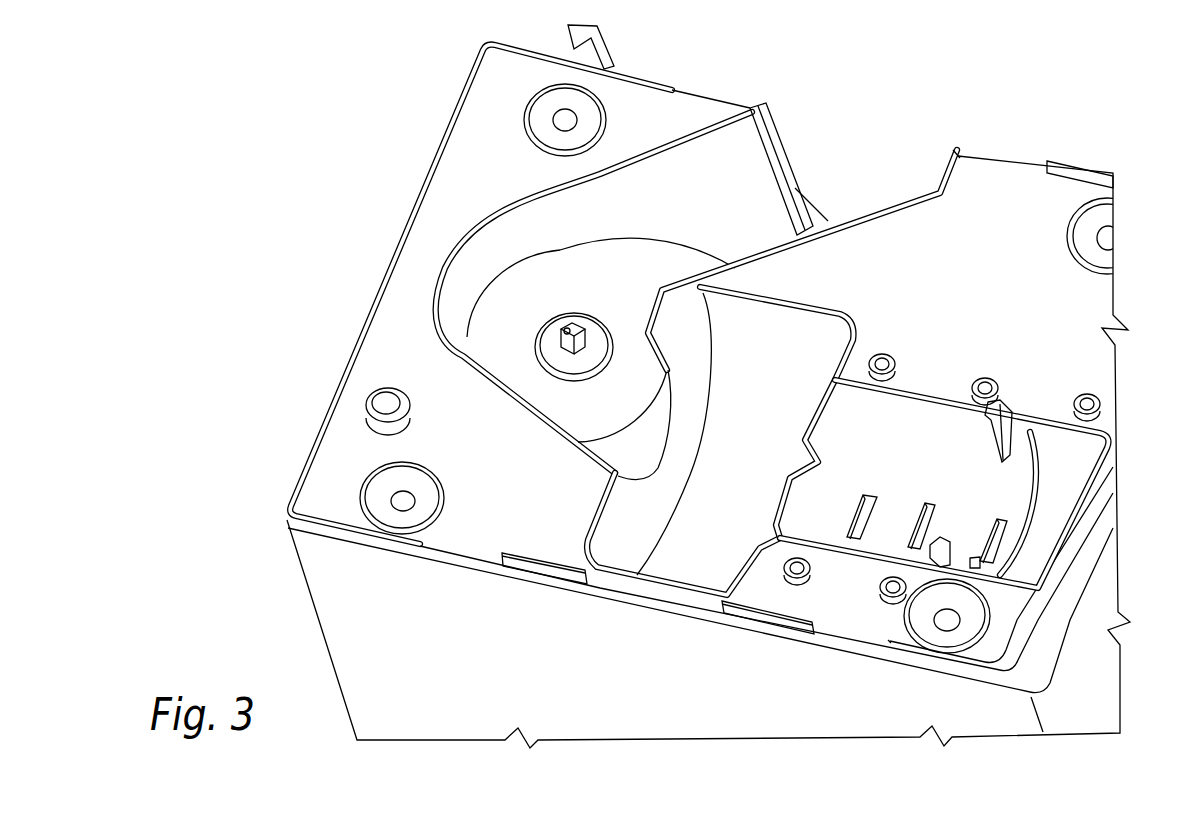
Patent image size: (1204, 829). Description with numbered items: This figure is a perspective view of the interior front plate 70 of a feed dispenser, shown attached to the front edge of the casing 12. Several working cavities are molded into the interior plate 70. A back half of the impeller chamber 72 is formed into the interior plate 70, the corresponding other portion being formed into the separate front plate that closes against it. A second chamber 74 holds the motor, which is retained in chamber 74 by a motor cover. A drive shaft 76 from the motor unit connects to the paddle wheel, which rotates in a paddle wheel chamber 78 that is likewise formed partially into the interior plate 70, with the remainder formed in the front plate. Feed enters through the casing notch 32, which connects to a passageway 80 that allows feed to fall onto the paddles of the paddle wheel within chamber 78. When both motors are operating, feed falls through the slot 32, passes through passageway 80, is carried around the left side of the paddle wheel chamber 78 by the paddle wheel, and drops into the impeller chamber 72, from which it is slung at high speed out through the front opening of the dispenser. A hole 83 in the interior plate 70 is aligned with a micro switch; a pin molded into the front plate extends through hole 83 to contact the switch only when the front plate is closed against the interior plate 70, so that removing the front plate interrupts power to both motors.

The casing 12 is at (323, 606).
The casing notch 32 is at (830, 128).
The interior plate 70 is at (396, 303).
The impeller chamber 72 is at (792, 352).
The chamber 74 is at (1002, 490).
The drive shaft 76 is at (498, 298).
The paddle wheel chamber 78 is at (560, 330).
The passageway 80 is at (718, 186).
The hole 83 is at (380, 405).